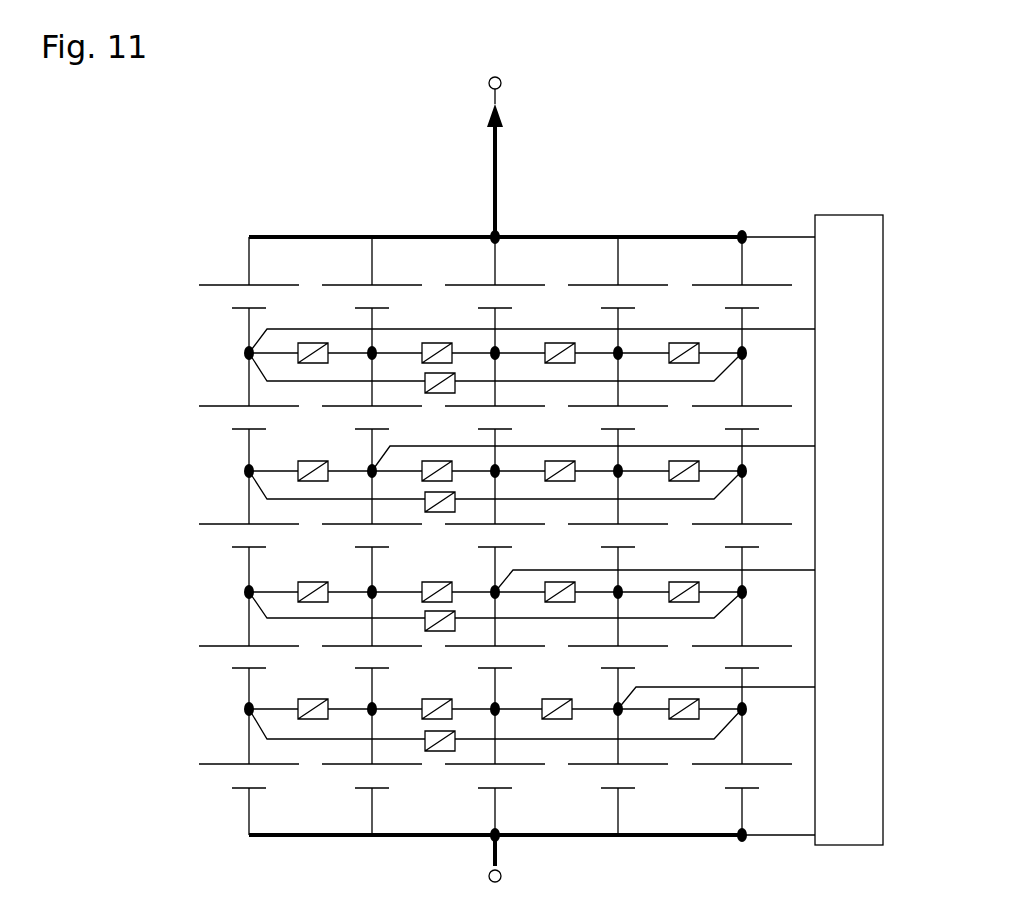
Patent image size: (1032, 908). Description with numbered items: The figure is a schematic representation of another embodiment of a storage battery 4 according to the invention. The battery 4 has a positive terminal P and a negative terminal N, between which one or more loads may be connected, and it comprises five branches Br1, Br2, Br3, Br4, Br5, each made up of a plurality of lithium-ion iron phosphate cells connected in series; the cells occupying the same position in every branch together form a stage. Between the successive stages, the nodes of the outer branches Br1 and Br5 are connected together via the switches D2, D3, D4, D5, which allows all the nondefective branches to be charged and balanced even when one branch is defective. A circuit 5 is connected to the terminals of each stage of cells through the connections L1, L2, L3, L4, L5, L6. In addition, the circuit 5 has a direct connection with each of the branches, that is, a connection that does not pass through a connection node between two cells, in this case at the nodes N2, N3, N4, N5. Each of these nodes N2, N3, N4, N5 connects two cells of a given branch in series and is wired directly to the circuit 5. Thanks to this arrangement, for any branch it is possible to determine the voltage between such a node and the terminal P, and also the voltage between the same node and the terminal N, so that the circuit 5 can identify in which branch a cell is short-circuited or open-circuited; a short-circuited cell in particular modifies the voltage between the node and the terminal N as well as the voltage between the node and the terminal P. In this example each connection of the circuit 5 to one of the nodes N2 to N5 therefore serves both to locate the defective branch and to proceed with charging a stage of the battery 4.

The battery 4 is at (677, 180).
The circuit 5 is at (850, 215).
The positive terminal P is at (501, 155).
The negative terminal N is at (512, 861).
The branch Br1 is at (248, 485).
The branch Br2 is at (374, 485).
The branch Br3 is at (497, 485).
The branch Br4 is at (618, 485).
The branch Br5 is at (742, 485).
The connection L1 is at (532, 248).
The connection L2 is at (524, 350).
The connection L3 is at (524, 471).
The connection L4 is at (524, 592).
The connection L5 is at (524, 709).
The connection L6 is at (532, 827).
The node N2 is at (240, 349).
The node N3 is at (363, 467).
The node N4 is at (486, 587).
The node N5 is at (609, 705).
The switch D2 is at (451, 387).
The switch D3 is at (451, 505).
The switch D4 is at (451, 625).
The switch D5 is at (451, 745).